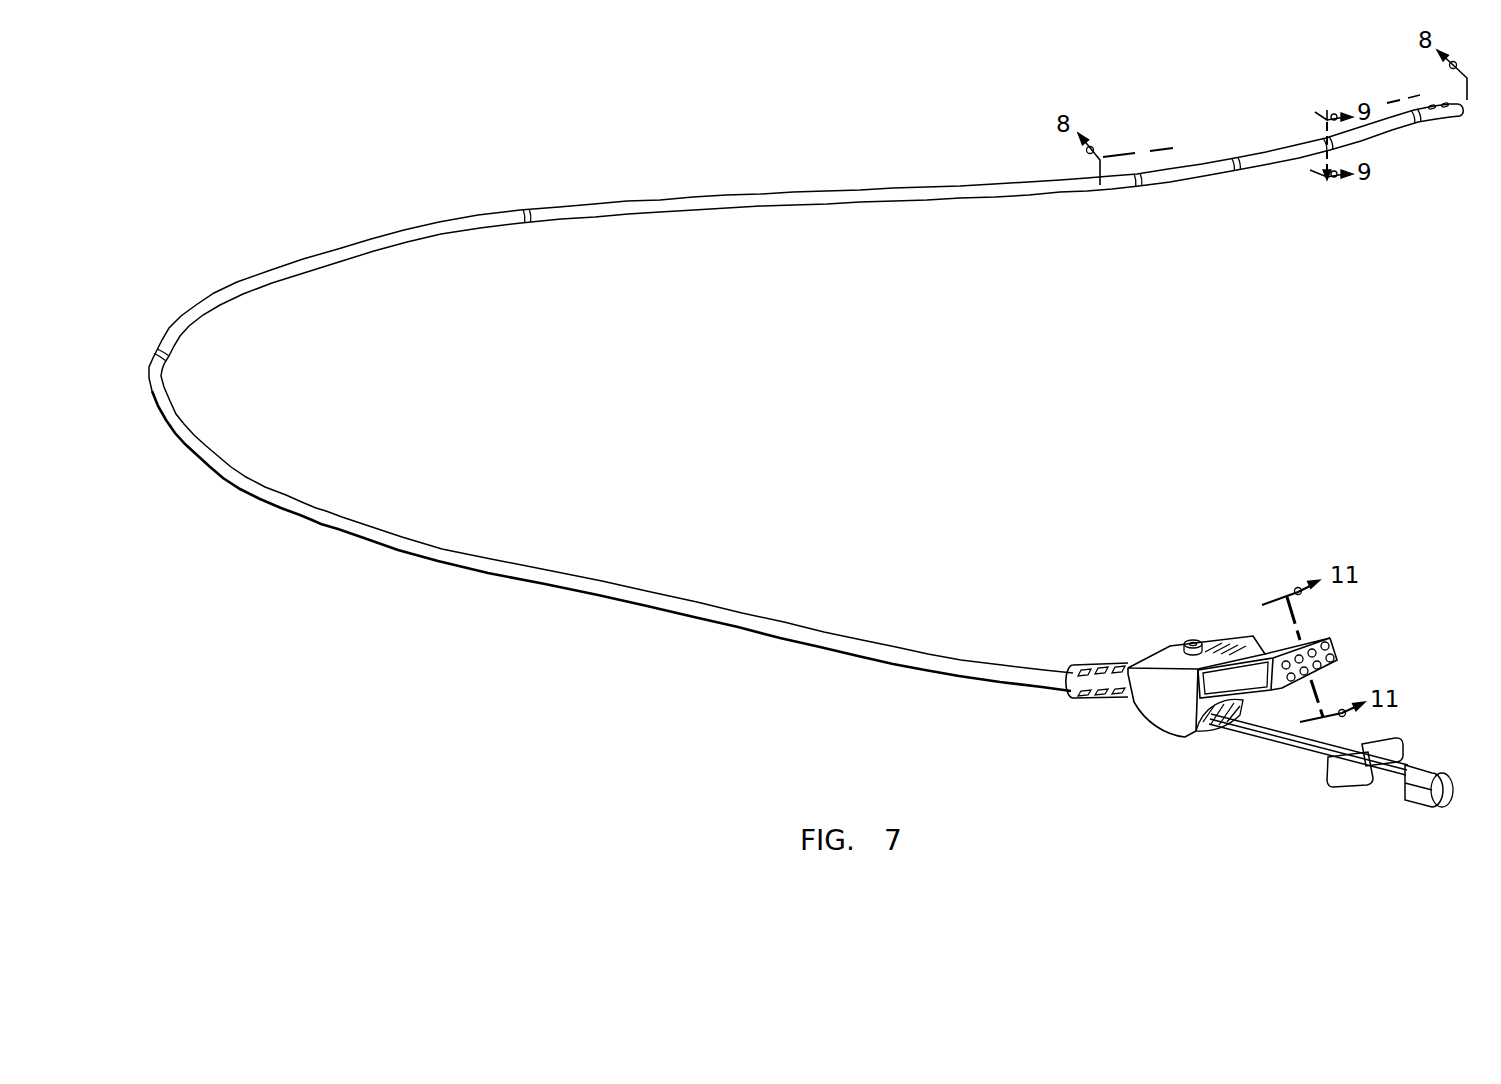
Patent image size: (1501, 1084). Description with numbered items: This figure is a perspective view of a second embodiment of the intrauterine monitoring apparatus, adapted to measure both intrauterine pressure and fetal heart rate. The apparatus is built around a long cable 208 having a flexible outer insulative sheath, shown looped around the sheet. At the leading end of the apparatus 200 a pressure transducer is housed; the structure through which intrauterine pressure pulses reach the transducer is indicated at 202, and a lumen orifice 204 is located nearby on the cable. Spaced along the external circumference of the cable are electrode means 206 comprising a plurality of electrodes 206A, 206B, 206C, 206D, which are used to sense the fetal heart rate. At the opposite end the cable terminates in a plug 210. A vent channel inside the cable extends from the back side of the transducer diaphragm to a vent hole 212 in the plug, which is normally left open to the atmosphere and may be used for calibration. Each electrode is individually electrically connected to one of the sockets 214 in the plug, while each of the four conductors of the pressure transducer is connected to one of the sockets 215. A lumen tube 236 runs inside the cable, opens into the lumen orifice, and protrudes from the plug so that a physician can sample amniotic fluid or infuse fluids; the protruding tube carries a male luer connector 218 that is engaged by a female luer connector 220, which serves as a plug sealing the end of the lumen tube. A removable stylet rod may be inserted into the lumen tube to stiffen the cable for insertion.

The leading end of the apparatus 200 is at (1462, 124).
The pressure communication structure 202 is at (1445, 102).
The lumen orifice 204 is at (1432, 104).
The electrode means 206 is at (1479, 130).
The electrode 206A is at (1140, 186).
The electrode 206B is at (1238, 171).
The electrode 206C is at (1322, 138).
The electrode 206D is at (1416, 124).
The cable 208 is at (793, 198).
The plug 210 is at (1138, 596).
The vent hole 212 is at (1194, 640).
The sockets 214 is at (1333, 640).
The sockets 215 is at (1340, 655).
The male luer connector 218 is at (1388, 776).
The female luer connector 220 is at (1430, 772).
The lumen tube 236 is at (1253, 730).